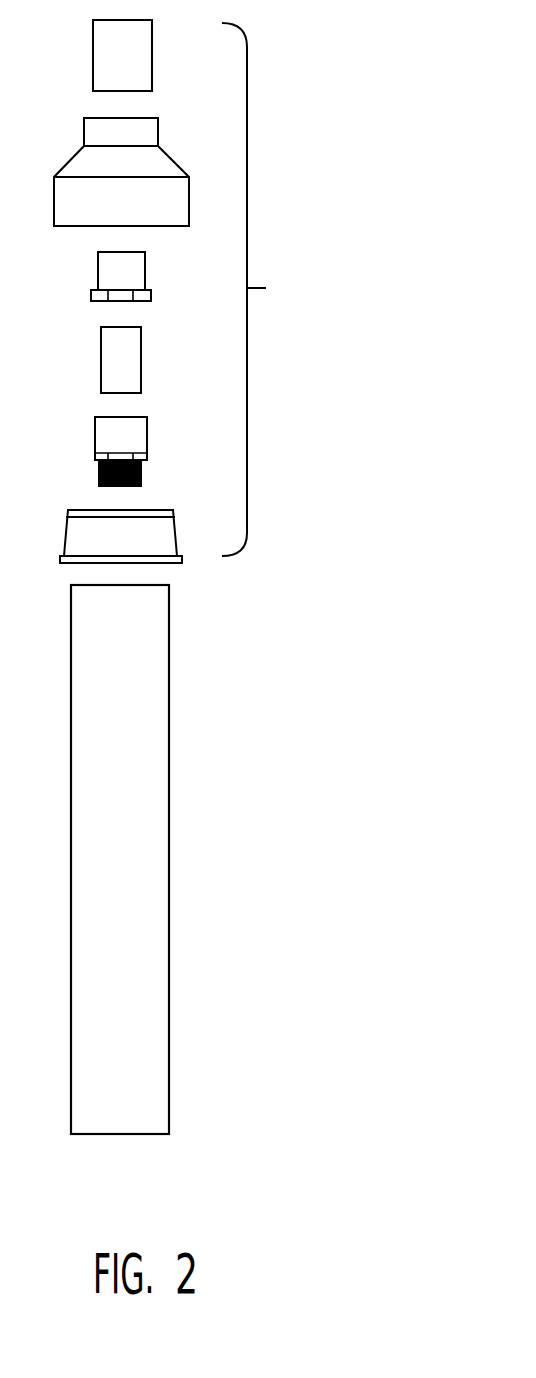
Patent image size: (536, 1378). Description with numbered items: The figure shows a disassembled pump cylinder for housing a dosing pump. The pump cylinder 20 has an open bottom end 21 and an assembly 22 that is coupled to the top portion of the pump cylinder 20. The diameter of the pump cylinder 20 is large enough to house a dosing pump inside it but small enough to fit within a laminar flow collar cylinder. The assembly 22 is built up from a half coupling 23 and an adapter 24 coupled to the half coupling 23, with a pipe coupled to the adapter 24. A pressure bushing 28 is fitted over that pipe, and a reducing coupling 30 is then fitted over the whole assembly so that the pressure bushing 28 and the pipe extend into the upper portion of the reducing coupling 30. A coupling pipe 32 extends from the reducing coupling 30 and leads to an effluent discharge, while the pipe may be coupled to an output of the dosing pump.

The pump cylinder 20 is at (168, 855).
The open bottom end 21 is at (110, 1134).
The assembly 22 is at (272, 289).
The half coupling 23 is at (175, 540).
The adapter 24 is at (137, 358).
The pressure bushing 28 is at (145, 283).
The reducing coupling 30 is at (189, 211).
The coupling pipe 32 is at (152, 62).